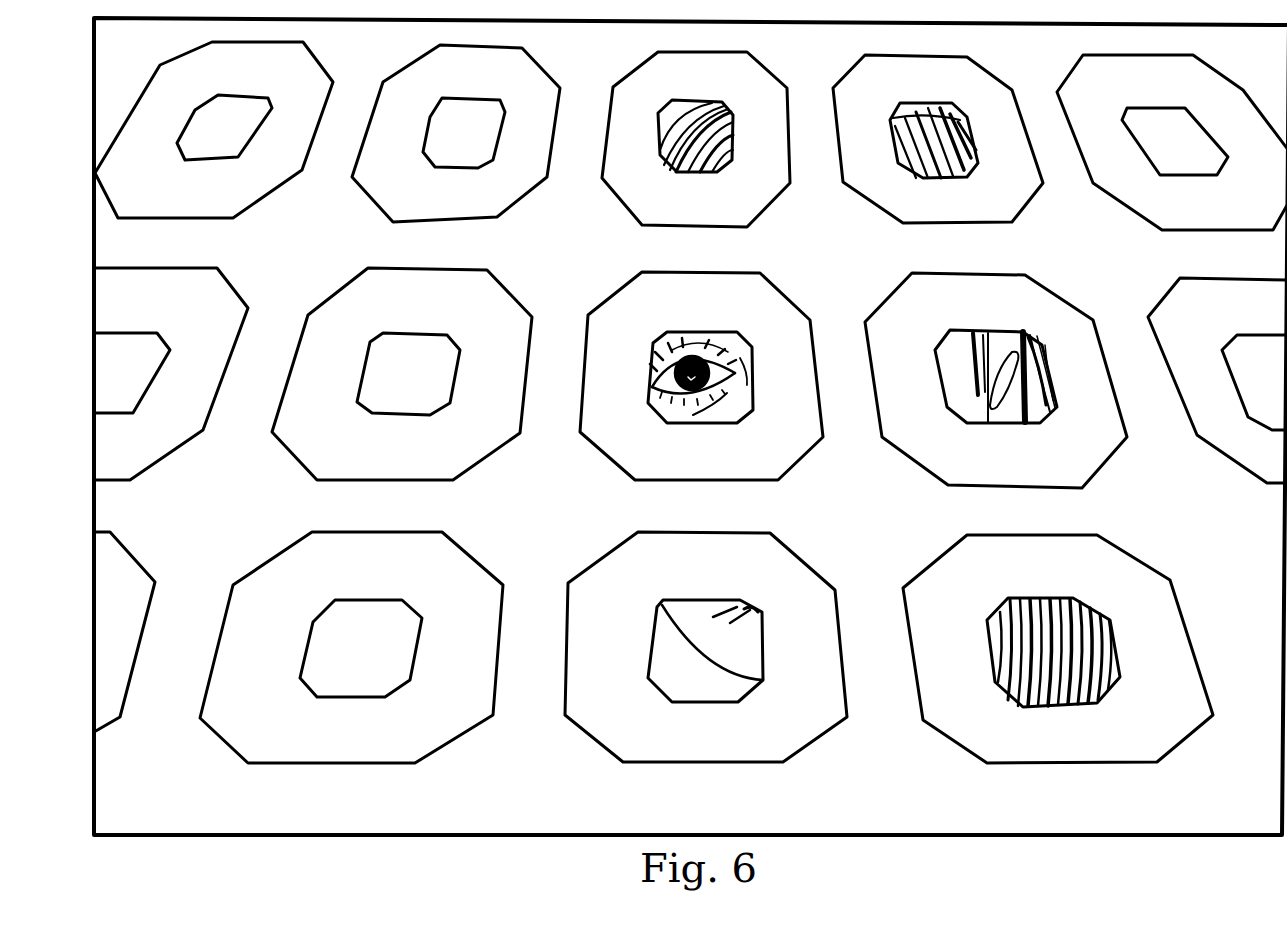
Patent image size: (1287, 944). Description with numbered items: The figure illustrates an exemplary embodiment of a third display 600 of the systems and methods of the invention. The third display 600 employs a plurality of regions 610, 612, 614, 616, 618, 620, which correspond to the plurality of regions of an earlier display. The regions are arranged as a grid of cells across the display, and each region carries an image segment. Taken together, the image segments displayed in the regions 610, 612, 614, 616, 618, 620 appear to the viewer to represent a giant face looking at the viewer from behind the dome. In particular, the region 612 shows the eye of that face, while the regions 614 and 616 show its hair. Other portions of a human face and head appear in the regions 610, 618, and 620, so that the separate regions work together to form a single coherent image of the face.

The third display 600 is at (584, 253).
The region 610 is at (740, 610).
The region 612 is at (725, 350).
The region 614 is at (725, 117).
The region 616 is at (940, 127).
The region 618 is at (1027, 340).
The region 620 is at (1078, 630).